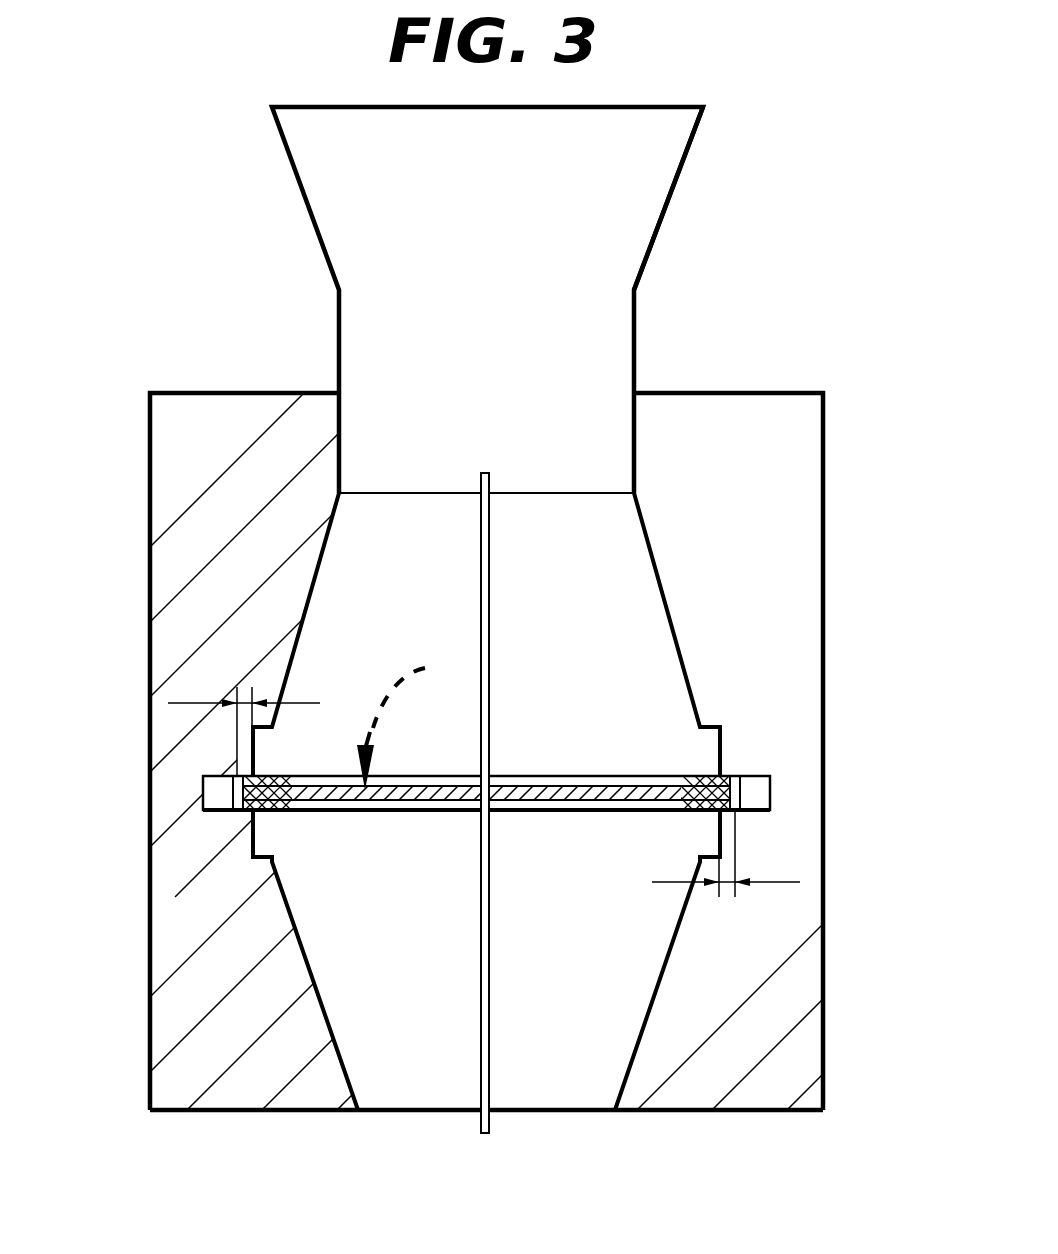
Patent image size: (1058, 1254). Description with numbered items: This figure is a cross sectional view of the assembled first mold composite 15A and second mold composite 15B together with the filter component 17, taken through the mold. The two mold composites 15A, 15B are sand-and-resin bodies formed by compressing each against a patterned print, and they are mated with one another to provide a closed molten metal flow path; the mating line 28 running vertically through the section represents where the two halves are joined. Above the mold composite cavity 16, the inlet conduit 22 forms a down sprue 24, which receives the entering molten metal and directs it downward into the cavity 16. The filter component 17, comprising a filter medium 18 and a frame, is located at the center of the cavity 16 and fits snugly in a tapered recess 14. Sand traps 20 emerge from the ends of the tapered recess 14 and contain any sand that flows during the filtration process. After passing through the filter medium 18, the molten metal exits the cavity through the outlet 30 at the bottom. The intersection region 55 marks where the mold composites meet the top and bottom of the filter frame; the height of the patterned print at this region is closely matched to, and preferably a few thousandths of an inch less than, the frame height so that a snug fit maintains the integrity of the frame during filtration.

The tapered recess 14 is at (700, 773).
The first mold composite 15A is at (168, 587).
The second mold composite 15B is at (800, 580).
The mold composite cavity 16 is at (592, 653).
The filter component 17 is at (410, 714).
The filter medium 18 is at (358, 803).
The sand trap 20 is at (772, 790).
The inlet conduit 22 is at (657, 218).
The down sprue 24 is at (505, 268).
The mating line 28 is at (478, 1068).
The outlet 30 is at (565, 1112).
The intersection region 55 is at (250, 690).